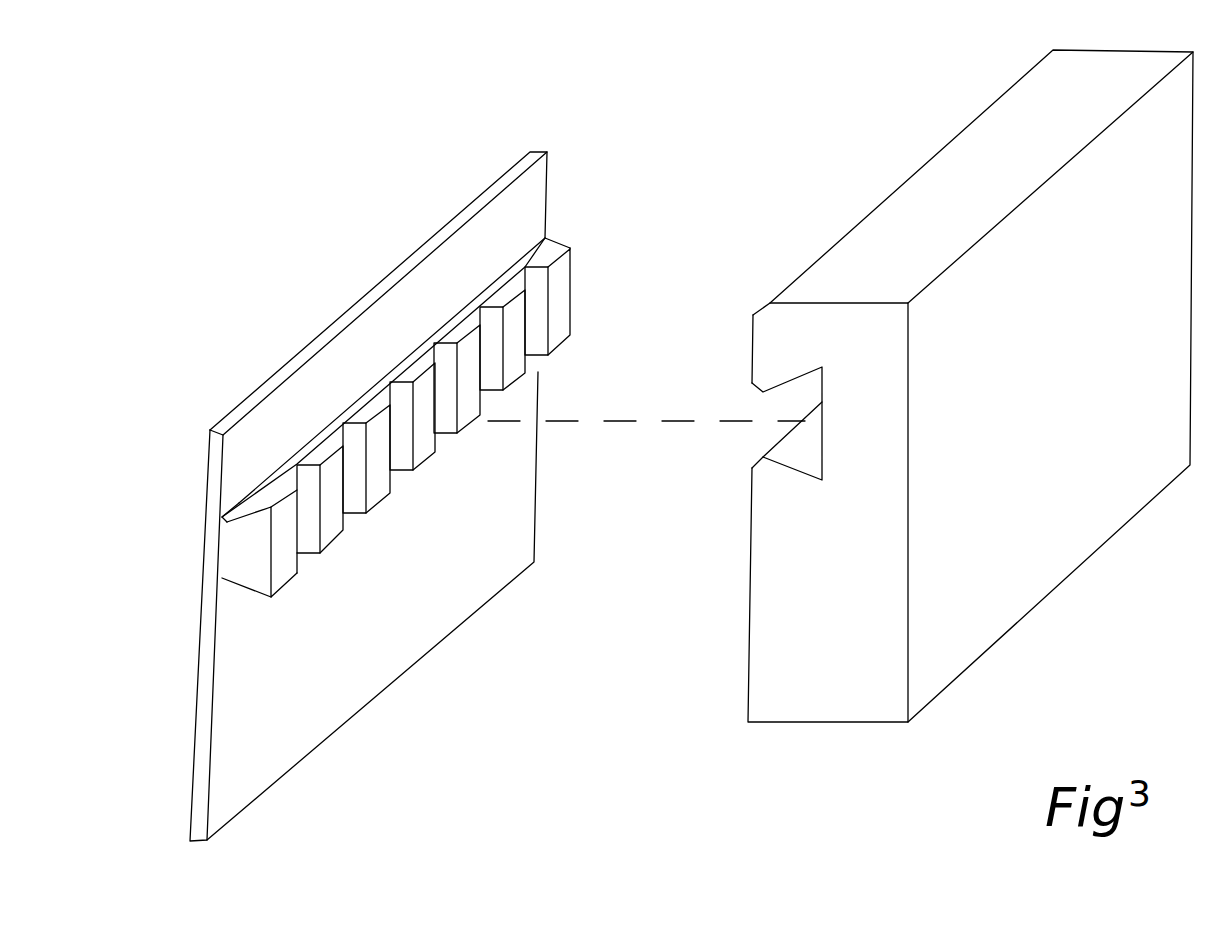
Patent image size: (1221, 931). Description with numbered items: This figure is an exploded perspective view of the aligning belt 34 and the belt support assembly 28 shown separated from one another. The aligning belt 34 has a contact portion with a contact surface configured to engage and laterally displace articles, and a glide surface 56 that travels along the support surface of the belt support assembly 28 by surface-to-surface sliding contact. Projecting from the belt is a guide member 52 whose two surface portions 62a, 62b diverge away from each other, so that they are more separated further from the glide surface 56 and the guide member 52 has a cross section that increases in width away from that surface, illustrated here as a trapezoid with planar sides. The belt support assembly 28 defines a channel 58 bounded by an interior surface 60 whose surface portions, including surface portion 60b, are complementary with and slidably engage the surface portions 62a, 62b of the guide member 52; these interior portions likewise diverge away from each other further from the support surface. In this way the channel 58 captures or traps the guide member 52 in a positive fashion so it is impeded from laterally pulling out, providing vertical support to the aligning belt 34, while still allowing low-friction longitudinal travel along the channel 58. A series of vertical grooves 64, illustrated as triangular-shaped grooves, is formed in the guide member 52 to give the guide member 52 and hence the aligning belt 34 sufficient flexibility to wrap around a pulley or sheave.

The belt support assembly 28 is at (1027, 63).
The aligning belt 34 is at (541, 143).
The guide member 52 is at (566, 246).
The glide surface 56 is at (507, 554).
The channel 58 is at (768, 434).
The interior surface 60 is at (796, 455).
The surface portion 60b is at (803, 440).
The surface portion 62a is at (305, 468).
The surface portion 62b is at (242, 588).
The vertical grooves 64 is at (537, 316).